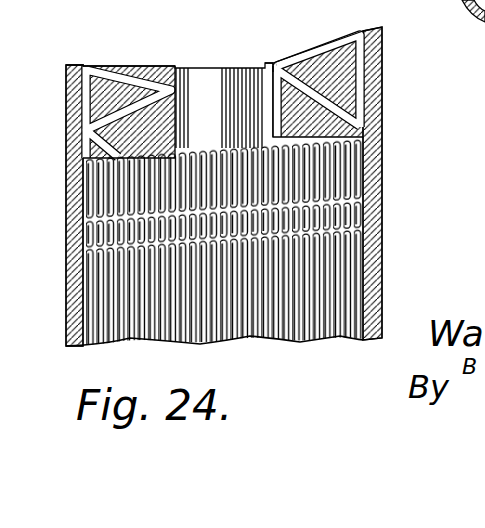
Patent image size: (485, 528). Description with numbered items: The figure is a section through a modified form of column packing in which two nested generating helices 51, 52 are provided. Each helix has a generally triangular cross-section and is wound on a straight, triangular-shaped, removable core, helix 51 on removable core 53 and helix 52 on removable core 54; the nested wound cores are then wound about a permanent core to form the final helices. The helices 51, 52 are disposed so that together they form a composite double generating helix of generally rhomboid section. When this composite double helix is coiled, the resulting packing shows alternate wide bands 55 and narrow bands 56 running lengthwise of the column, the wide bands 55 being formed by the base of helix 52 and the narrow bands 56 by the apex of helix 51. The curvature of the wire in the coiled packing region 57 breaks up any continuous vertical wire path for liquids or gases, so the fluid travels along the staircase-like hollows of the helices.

The generating helix 51 is at (360, 62).
The generating helix 52 is at (362, 100).
The removable core 53 is at (325, 66).
The removable core 54 is at (333, 123).
The wide band 55 is at (280, 108).
The narrow band 56 is at (277, 72).
The tube section 57 is at (198, 78).